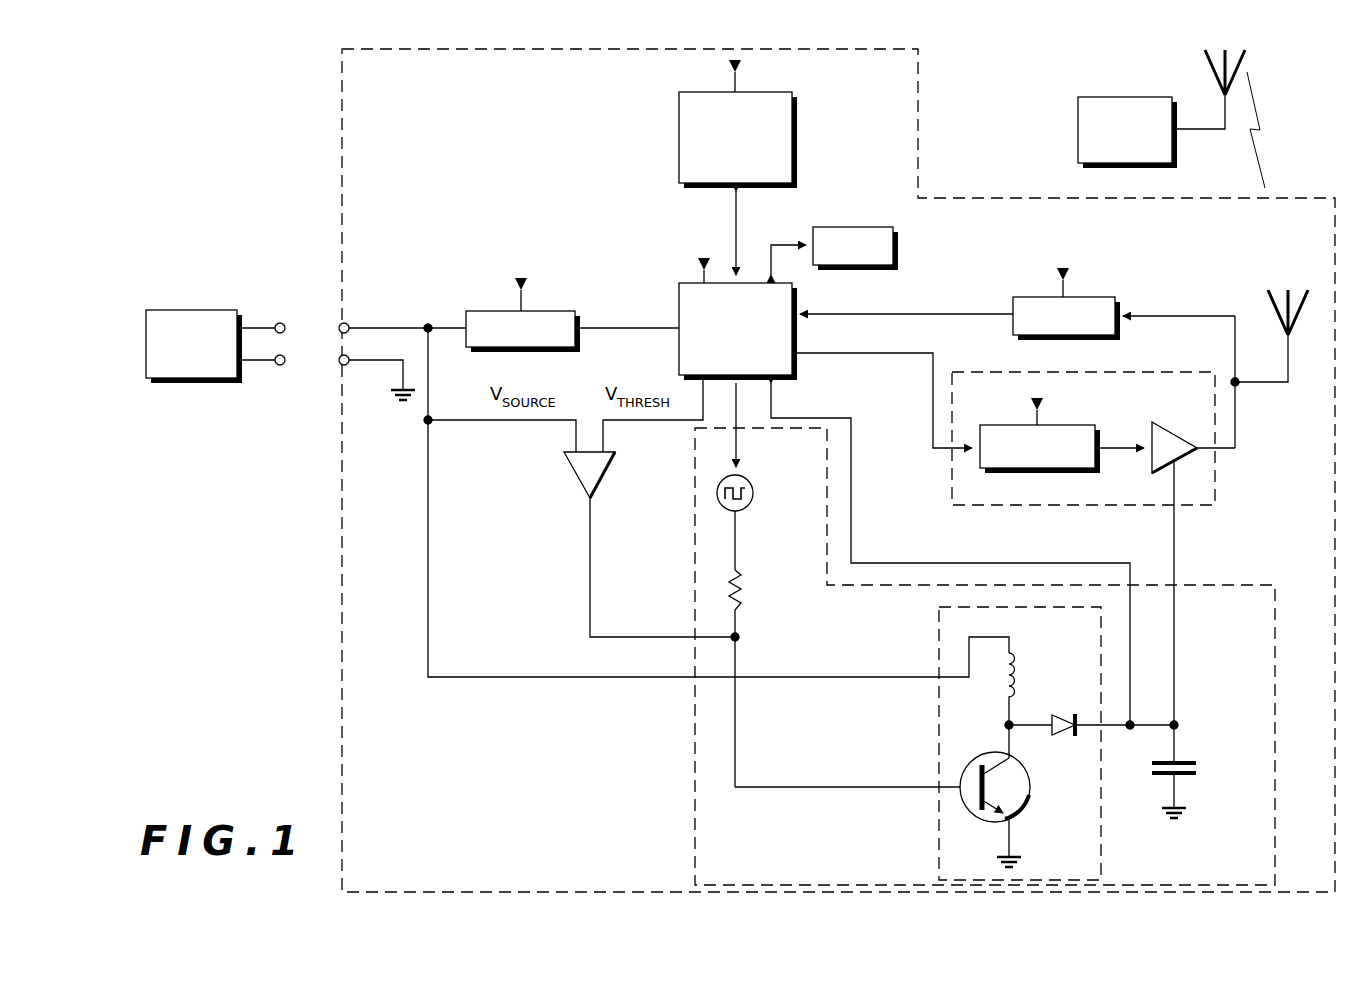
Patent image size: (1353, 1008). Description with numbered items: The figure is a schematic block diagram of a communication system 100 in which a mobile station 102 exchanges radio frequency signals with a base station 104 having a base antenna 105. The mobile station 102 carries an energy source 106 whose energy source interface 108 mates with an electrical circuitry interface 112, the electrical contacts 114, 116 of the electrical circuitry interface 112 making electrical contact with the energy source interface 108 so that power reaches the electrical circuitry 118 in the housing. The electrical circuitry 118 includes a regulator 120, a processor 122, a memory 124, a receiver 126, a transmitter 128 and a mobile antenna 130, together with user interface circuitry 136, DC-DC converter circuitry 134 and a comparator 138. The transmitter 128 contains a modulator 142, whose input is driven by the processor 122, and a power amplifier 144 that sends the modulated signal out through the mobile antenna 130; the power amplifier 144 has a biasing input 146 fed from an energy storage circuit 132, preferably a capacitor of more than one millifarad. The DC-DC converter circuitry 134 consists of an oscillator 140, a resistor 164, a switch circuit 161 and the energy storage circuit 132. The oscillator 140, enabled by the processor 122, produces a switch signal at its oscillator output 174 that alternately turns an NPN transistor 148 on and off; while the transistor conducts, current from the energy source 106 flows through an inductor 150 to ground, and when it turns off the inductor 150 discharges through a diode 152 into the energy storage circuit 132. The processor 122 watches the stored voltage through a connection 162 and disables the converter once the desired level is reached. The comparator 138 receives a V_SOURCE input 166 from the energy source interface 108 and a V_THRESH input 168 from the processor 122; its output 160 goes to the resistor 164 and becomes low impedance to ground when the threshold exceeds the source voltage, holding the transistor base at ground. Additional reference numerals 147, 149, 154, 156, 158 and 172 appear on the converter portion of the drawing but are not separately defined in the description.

The communication system 100 is at (245, 631).
The mobile station 102 is at (342, 733).
The base station 104 is at (1108, 97).
The base antenna 105 is at (1214, 70).
The energy source 106 is at (203, 310).
The energy source interface 108 is at (292, 340).
The electrical circuitry interface 112 is at (330, 352).
The electrical contact 114 is at (349, 325).
The electrical contact 116 is at (349, 364).
The electrical circuitry 118 is at (445, 175).
The regulator 120 is at (466, 312).
The processor 122 is at (679, 304).
The memory 124 is at (858, 265).
The receiver 126 is at (1013, 297).
The transmitter 128 is at (1215, 488).
The mobile antenna 130 is at (1288, 370).
The energy storage circuit 132 is at (1190, 774).
The DC-DC converter circuitry 134 is at (672, 736).
The user interface circuitry 136 is at (679, 128).
The comparator 138 is at (578, 478).
The oscillator 140 is at (752, 505).
The modulator 142 is at (1088, 425).
The power amplifier 144 is at (1178, 432).
The biasing input 146 is at (1174, 494).
The collector node 147 is at (1006, 735).
The NPN transistor 148 is at (1032, 789).
The ground connection 149 is at (1012, 841).
The inductor 150 is at (1019, 656).
The diode 152 is at (1060, 714).
The source voltage line 154 is at (910, 680).
The base drive line 156 is at (904, 787).
The stored voltage node 158 is at (1126, 729).
The output 160 is at (588, 550).
The switch circuit 161 is at (939, 833).
The connection 162 is at (775, 405).
The resistor 164 is at (744, 593).
The V_SOURCE input 166 is at (576, 437).
The V_THRESH input 168 is at (603, 437).
The pulse generator control line 172 is at (742, 460).
The oscillator output 174 is at (740, 548).